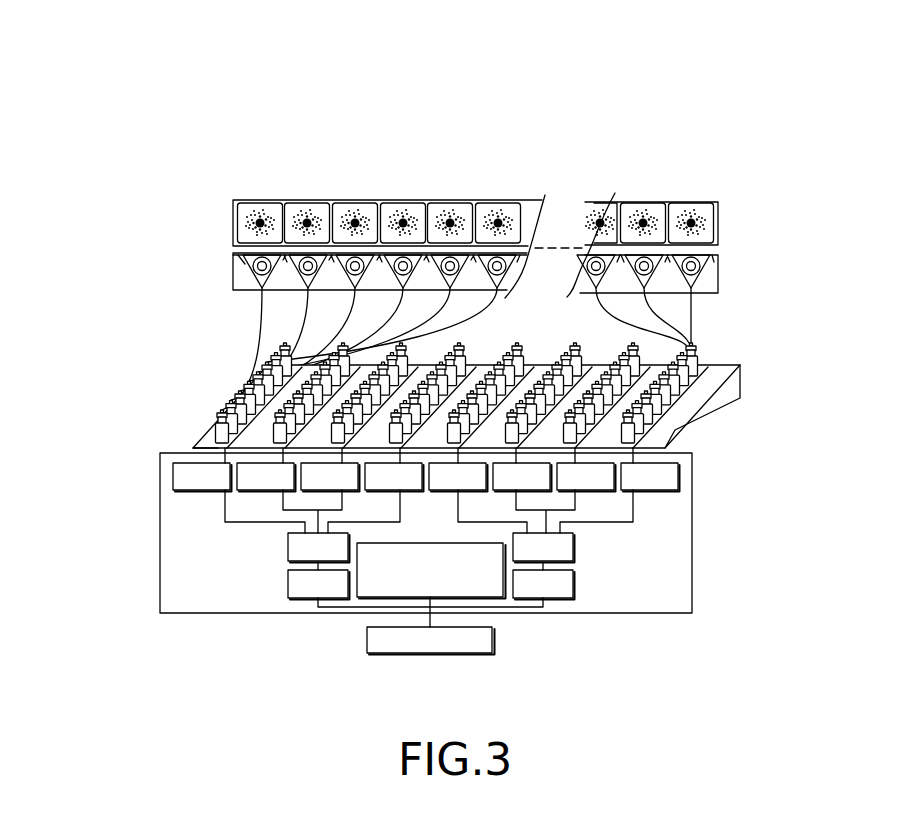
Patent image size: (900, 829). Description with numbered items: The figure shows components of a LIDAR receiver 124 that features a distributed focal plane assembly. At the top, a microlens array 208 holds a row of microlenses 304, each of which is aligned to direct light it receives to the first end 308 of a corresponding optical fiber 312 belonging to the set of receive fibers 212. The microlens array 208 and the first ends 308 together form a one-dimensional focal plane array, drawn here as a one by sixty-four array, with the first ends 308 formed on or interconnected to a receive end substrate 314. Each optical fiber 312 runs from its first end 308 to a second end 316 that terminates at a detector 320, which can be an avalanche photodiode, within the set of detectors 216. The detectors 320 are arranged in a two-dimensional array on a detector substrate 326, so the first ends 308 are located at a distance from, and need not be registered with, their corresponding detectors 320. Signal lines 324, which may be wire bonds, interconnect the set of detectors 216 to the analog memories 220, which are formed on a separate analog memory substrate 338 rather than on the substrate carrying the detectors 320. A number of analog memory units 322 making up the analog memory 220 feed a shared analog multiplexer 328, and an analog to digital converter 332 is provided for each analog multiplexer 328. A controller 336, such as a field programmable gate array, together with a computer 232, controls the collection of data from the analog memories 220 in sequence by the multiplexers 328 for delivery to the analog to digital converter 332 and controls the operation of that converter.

The LIDAR receiver 124 is at (447, 98).
The microlens array 208 is at (246, 215).
The set of receive fibers 212 is at (232, 268).
The microlens 304 is at (331, 200).
The first end of optical fiber 308 is at (233, 295).
The optical fiber 312 is at (243, 333).
The receive end substrate 314 is at (707, 282).
The set of detectors 216 is at (718, 370).
The detector substrate 326 is at (690, 393).
The second end of optical fiber 316 is at (223, 427).
The detector 320 is at (213, 433).
The signal lines 324 is at (213, 460).
The analog memories 220 is at (172, 470).
The analog memory units 322 is at (180, 490).
The analog multiplexer 328 is at (288, 548).
The analog to digital converter 332 is at (288, 588).
The controller 336 is at (366, 607).
The analog memory substrate 338 is at (178, 609).
The computer 232 is at (444, 653).